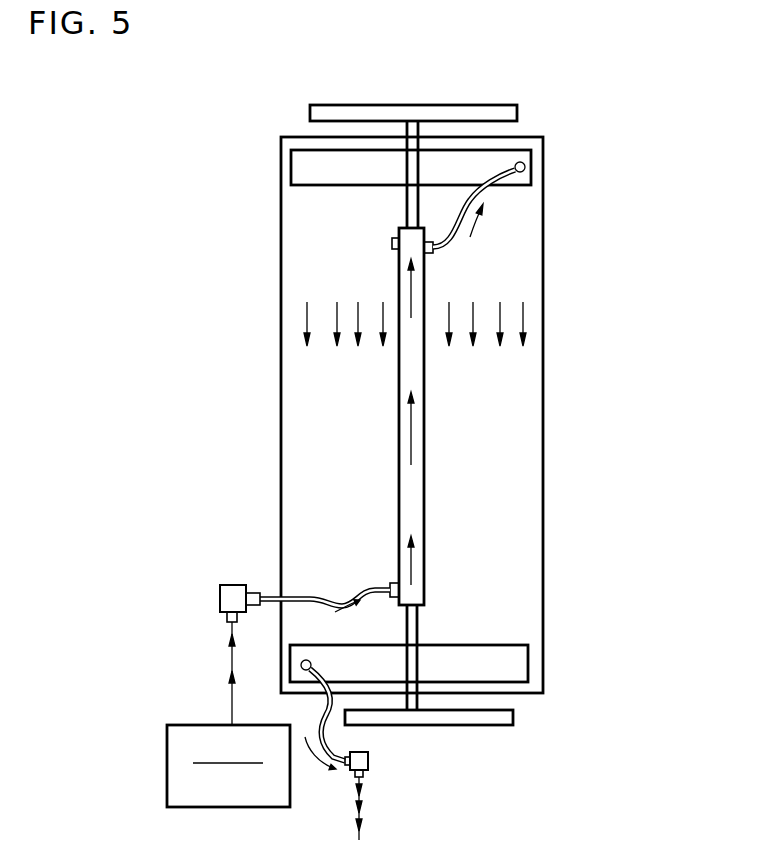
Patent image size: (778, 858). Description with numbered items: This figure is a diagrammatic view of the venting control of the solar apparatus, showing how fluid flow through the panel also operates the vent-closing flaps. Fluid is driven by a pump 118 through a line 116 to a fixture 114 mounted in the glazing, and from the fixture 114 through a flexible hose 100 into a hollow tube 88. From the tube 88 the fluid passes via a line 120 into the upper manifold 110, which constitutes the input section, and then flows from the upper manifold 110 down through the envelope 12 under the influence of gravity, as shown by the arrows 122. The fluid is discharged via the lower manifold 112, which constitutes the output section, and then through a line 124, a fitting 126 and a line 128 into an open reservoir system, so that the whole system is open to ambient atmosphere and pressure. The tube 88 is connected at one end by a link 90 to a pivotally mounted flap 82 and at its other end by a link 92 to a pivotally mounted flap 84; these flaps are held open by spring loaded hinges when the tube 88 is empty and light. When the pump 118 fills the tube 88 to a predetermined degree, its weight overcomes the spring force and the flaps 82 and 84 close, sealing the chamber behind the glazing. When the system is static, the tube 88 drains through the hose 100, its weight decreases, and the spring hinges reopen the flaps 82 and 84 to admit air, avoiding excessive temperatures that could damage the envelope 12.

The envelope 12 is at (290, 400).
The flap 82 is at (495, 720).
The flap 84 is at (347, 112).
The hollow tube 88 is at (399, 401).
The link 90 is at (411, 626).
The link 92 is at (415, 168).
The flexible hose 100 is at (390, 583).
The upper manifold 110 is at (300, 168).
The lower manifold 112 is at (517, 660).
The fixture 114 is at (233, 585).
The line 116 is at (232, 690).
The pump 118 is at (228, 766).
The line 120 is at (447, 247).
The arrows 122 is at (337, 325).
The line 124 is at (327, 715).
The fitting 126 is at (368, 762).
The line 128 is at (362, 838).